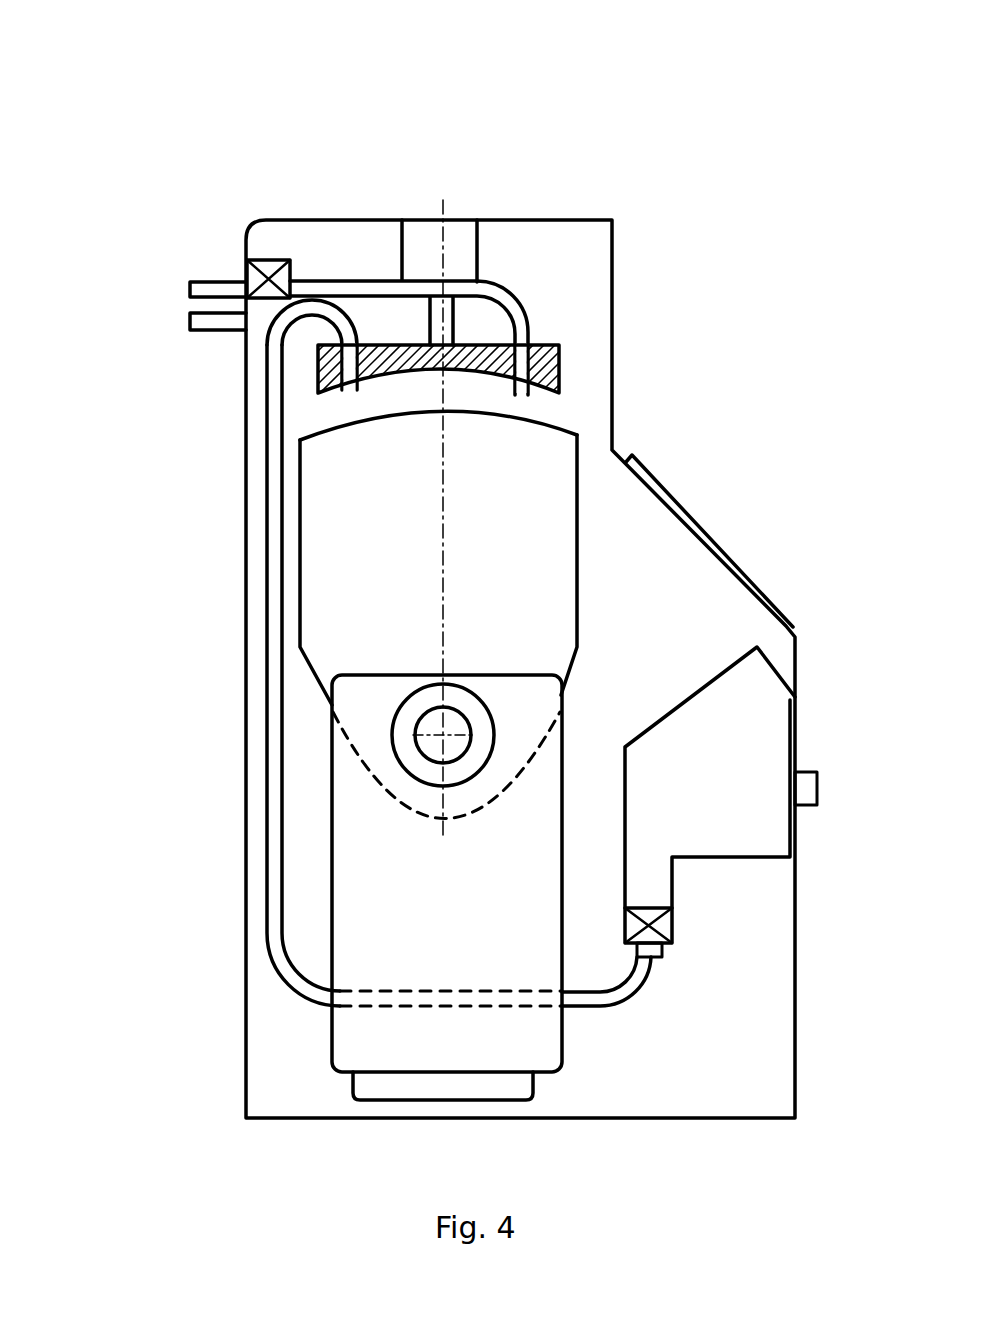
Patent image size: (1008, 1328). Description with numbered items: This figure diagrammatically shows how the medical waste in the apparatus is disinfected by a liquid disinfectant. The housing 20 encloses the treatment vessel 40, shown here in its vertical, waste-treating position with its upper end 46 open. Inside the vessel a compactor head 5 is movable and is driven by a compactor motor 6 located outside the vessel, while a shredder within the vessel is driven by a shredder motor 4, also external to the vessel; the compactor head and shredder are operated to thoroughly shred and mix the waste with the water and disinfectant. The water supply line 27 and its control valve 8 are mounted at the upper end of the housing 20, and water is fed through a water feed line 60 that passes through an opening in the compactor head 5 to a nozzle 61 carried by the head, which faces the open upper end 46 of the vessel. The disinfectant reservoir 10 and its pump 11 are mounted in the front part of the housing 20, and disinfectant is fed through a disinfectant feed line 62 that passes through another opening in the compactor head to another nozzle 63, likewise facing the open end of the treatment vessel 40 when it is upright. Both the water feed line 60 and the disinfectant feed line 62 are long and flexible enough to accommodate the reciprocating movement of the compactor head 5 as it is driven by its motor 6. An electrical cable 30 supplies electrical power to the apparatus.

The housing 20 is at (318, 222).
The control valve 8 is at (270, 262).
The water supply line 27 is at (207, 277).
The electrical cable 30 is at (205, 330).
The compactor motor 6 is at (452, 243).
The water feed line 60 is at (536, 333).
The nozzle 61 is at (523, 393).
The upper end 46 is at (576, 432).
The treatment vessel 40 is at (586, 596).
The nozzle 63 is at (352, 386).
The compactor head 5 is at (434, 379).
The disinfectant feed line 62 is at (277, 633).
The shredder motor 4 is at (357, 945).
The disinfectant reservoir 10 is at (745, 783).
The pump 11 is at (665, 928).